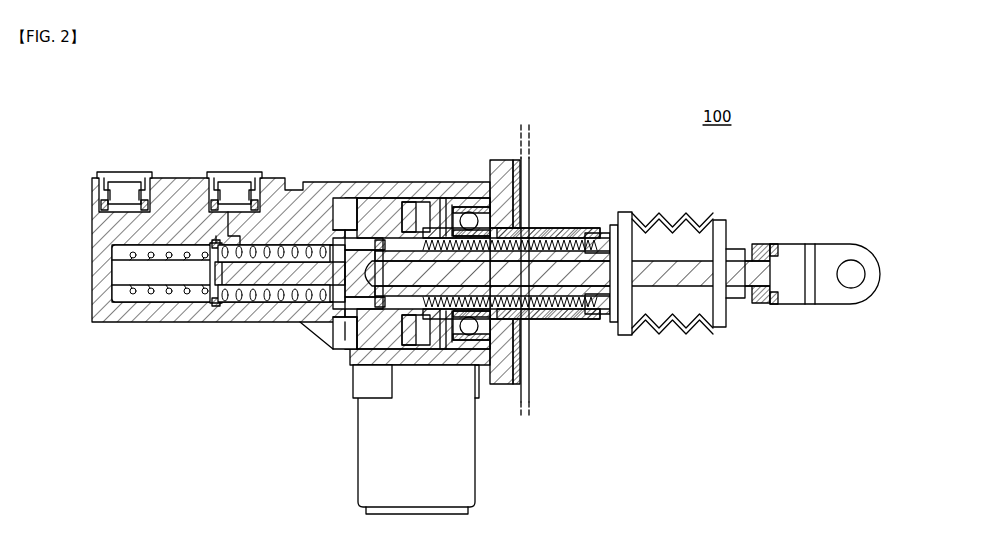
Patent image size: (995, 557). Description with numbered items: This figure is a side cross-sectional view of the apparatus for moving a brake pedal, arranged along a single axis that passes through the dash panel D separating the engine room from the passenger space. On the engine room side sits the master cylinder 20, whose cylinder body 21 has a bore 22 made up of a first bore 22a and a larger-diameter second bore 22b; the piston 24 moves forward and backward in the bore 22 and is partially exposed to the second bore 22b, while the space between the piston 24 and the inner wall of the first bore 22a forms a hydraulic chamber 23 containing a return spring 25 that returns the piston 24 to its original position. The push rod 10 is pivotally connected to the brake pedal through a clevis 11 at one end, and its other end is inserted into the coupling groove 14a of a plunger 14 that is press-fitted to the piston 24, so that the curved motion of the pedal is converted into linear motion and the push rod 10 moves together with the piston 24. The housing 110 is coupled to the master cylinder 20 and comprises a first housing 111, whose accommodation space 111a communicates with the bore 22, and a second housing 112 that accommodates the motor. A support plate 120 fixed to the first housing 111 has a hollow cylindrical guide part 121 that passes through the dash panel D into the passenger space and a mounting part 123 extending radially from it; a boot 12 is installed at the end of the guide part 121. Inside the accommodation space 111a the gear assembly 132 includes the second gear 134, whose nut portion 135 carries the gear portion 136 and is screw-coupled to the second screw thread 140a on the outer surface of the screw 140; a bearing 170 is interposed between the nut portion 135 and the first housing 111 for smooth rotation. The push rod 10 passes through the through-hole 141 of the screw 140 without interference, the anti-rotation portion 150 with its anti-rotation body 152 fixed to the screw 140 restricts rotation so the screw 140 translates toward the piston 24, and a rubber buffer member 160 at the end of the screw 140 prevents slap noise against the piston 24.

The push rod 10 is at (672, 262).
The clevis 11 is at (836, 301).
The boot 12 is at (726, 312).
The plunger 14 is at (362, 292).
The coupling groove 14a is at (378, 307).
The master cylinder 20 is at (166, 152).
The cylinder body 21 is at (178, 178).
The bore 22 is at (272, 360).
The first bore 22a is at (205, 304).
The second bore 22b is at (302, 318).
The hydraulic chamber 23 is at (162, 302).
The piston 24 is at (302, 330).
The return spring 25 is at (124, 302).
The housing 110 is at (467, 439).
The first housing 111 is at (442, 365).
The accommodation space 111a is at (364, 198).
The second housing 112 is at (468, 450).
The support plate 120 is at (551, 270).
The guide part 121 is at (536, 222).
The mounting part 123 is at (512, 172).
The gear assembly 132 is at (395, 205).
The second gear 134 is at (456, 153).
The nut portion 135 is at (447, 205).
The gear portion 136 is at (412, 208).
The screw 140 is at (572, 309).
The second screw thread 140a is at (540, 310).
The through-hole 141 is at (580, 245).
The anti-rotation portion 150 is at (618, 311).
The anti-rotation body 152 is at (596, 319).
The buffer member 160 is at (350, 205).
The bearing 170 is at (466, 208).
The dash panel D is at (531, 133).